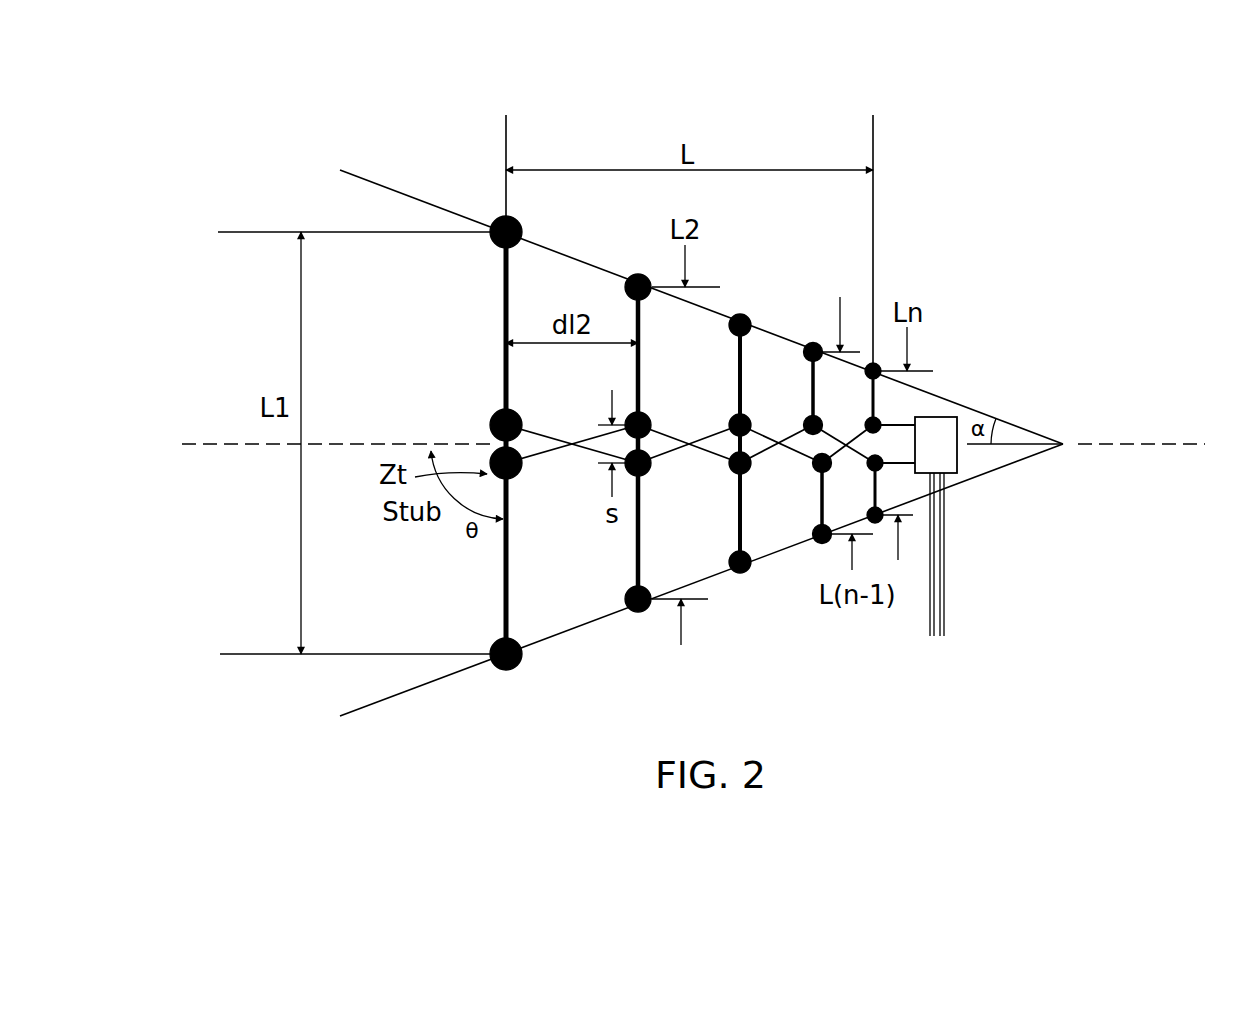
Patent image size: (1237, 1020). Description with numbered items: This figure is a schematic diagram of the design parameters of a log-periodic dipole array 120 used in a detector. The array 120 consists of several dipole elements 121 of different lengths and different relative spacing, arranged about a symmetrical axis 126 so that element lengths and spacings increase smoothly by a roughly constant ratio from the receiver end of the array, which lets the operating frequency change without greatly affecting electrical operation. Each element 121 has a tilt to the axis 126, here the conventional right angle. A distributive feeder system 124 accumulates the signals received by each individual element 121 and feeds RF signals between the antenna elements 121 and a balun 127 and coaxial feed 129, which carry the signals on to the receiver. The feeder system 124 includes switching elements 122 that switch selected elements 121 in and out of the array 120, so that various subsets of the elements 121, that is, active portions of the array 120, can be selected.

The log-periodic dipole array 120 is at (430, 146).
The dipole element 121 is at (500, 293).
The switching element 122 is at (491, 449).
The feeder system 124 is at (554, 459).
The symmetrical axis 126 is at (205, 436).
The balun 127 is at (938, 412).
The coaxial feed 129 is at (1046, 556).